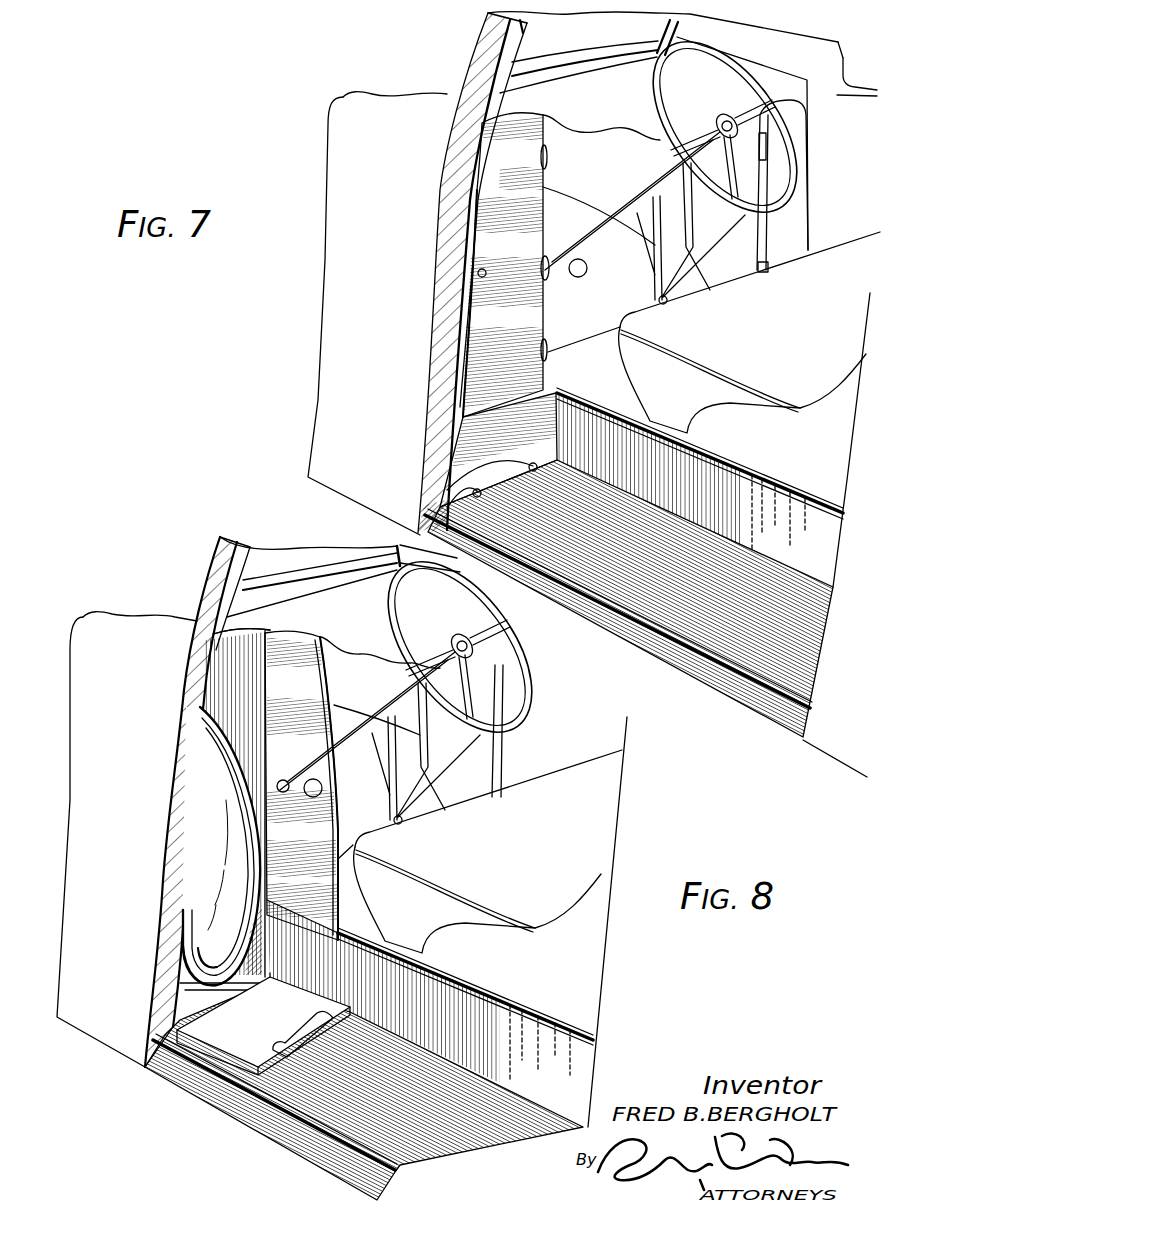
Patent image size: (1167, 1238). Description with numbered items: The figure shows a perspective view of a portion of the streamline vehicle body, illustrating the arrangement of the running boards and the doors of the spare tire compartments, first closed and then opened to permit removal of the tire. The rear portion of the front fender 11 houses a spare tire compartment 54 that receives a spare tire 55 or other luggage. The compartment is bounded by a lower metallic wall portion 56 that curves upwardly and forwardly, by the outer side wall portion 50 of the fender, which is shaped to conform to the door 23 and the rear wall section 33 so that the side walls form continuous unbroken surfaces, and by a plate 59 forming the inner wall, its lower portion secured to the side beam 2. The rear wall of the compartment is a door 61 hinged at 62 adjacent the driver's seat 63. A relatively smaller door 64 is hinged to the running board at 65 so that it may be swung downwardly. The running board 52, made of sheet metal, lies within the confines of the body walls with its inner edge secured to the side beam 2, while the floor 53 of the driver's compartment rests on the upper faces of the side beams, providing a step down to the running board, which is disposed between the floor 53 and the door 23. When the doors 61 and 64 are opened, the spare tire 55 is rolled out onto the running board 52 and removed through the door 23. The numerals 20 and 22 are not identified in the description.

In FIG. 7, the side beam 2 is at (740, 518).
In FIG. 8, the side beam 2 is at (477, 1047).
In FIG. 7, the front fender 11 is at (386, 92).
In FIG. 8, the front fender 11 is at (103, 628).
In FIG. 8, the wheel housing base bracket 20 is at (182, 965).
In FIG. 7, the windshield header 22 is at (589, 13).
In FIG. 8, the windshield header 22 is at (278, 560).
In FIG. 7, the door 23 is at (858, 100).
In FIG. 7, the rear wall section 33 is at (860, 523).
In FIG. 7, the outer side wall portion 50 is at (372, 300).
In FIG. 8, the outer side wall portion 50 is at (107, 927).
In FIG. 7, the running board 52 is at (705, 622).
In FIG. 8, the running board 52 is at (300, 1135).
In FIG. 7, the floor 53 is at (598, 348).
In FIG. 8, the floor 53 is at (343, 870).
In FIG. 8, the spare tire compartment 54 is at (227, 663).
In FIG. 8, the spare tire 55 is at (222, 845).
In FIG. 8, the lower metallic wall portion 56 is at (215, 958).
In FIG. 8, the plate 59 is at (243, 686).
In FIG. 7, the door 61 is at (460, 237).
In FIG. 8, the door 61 is at (297, 650).
In FIG. 7, the hinge 62 is at (548, 167).
In FIG. 7, the driver's seat 63 is at (851, 252).
In FIG. 8, the driver's seat 63 is at (552, 778).
In FIG. 7, the smaller door 64 is at (470, 448).
In FIG. 8, the smaller door 64 is at (240, 1045).
In FIG. 7, the hinge 65 is at (447, 487).